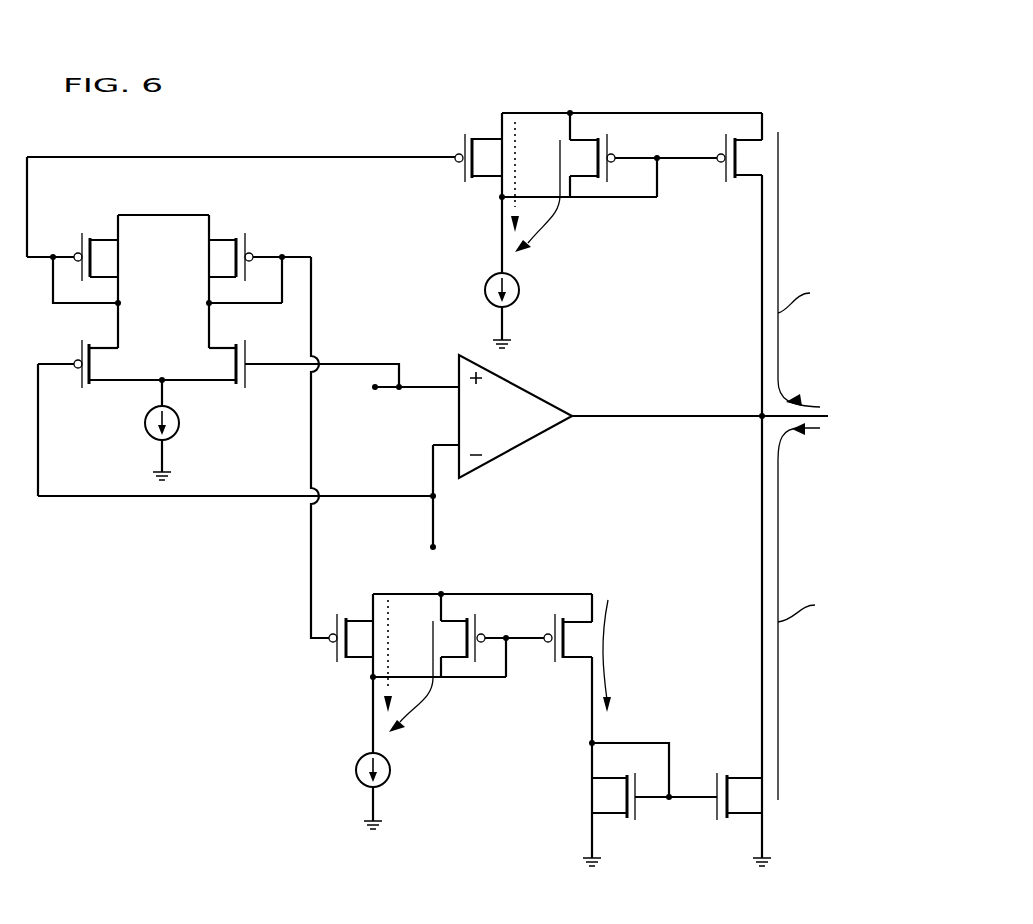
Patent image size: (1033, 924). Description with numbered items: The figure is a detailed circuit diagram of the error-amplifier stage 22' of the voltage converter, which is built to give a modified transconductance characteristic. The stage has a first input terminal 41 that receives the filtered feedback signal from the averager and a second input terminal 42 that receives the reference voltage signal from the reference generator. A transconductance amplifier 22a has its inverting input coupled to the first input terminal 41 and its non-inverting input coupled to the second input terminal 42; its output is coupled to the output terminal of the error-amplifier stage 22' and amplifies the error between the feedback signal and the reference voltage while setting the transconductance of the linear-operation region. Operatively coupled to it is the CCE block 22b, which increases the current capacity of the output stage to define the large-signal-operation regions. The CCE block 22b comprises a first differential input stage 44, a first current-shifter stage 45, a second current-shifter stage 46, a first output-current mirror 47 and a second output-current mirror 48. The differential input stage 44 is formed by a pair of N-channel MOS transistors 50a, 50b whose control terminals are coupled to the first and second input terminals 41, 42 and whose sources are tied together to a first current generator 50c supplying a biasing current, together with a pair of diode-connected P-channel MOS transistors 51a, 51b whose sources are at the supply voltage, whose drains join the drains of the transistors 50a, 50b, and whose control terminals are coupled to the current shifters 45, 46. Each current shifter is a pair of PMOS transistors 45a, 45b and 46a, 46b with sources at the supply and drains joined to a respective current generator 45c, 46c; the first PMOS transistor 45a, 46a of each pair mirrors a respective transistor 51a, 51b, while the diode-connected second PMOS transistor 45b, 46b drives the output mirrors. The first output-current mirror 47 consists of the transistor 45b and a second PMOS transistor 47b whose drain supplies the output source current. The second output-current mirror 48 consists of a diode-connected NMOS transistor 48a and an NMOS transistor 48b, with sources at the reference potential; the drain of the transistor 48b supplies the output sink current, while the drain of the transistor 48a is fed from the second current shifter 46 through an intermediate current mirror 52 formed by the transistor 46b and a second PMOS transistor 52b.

The error-amplifier stage 22' is at (460, 464).
The transconductance amplifier 22a is at (520, 385).
The CCE block 22b is at (350, 325).
The first input terminal 41 is at (433, 547).
The second input terminal 42 is at (375, 388).
The first differential input stage 44 is at (130, 405).
The first current-shifter stage 45 is at (492, 94).
The first PMOS transistor 45a is at (459, 170).
The second PMOS transistor 45b is at (607, 182).
The current generator 45c is at (519, 290).
The second current-shifter stage 46 is at (317, 811).
The first PMOS transistor 46a is at (333, 650).
The second PMOS transistor 46b is at (478, 655).
The current generator 46c is at (390, 780).
The first output-current mirror 47 is at (712, 186).
The second PMOS transistor 47b is at (742, 160).
The second output-current mirror 48 is at (688, 826).
The first NMOS transistor 48a is at (620, 790).
The second NMOS transistor 48b is at (732, 800).
The N-channel MOS transistor 50a is at (93, 365).
The N-channel MOS transistor 50b is at (233, 365).
The first current generator 50c is at (178, 432).
The P-channel MOS transistor 51a is at (93, 259).
The P-channel MOS transistor 51b is at (233, 258).
The intermediate current mirror 52 is at (636, 619).
The second PMOS transistor 52b is at (565, 640).